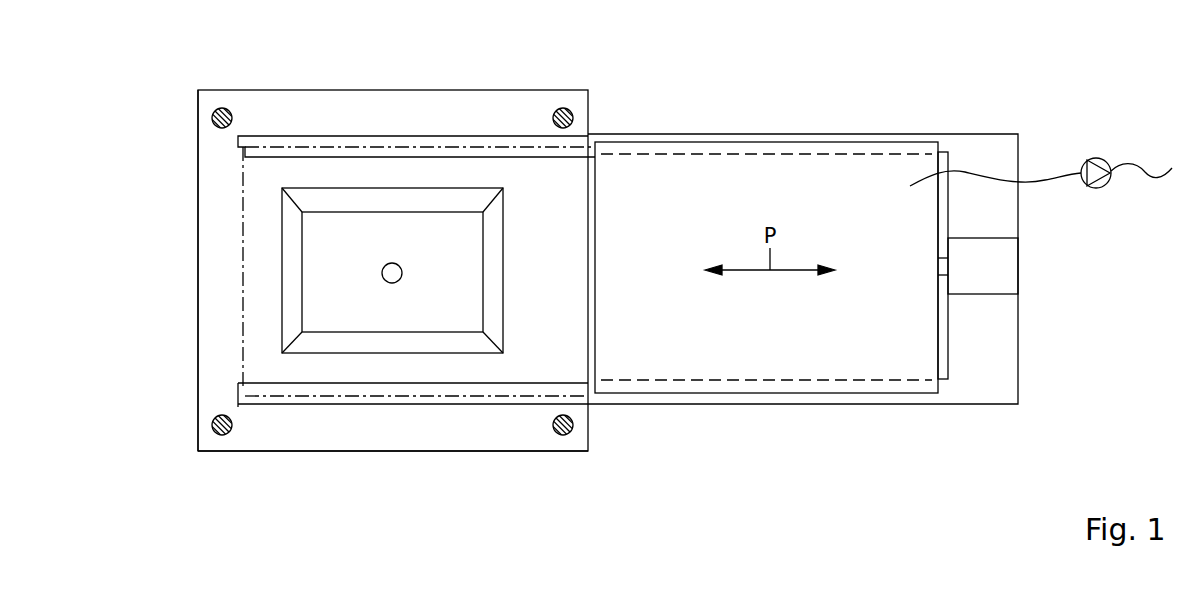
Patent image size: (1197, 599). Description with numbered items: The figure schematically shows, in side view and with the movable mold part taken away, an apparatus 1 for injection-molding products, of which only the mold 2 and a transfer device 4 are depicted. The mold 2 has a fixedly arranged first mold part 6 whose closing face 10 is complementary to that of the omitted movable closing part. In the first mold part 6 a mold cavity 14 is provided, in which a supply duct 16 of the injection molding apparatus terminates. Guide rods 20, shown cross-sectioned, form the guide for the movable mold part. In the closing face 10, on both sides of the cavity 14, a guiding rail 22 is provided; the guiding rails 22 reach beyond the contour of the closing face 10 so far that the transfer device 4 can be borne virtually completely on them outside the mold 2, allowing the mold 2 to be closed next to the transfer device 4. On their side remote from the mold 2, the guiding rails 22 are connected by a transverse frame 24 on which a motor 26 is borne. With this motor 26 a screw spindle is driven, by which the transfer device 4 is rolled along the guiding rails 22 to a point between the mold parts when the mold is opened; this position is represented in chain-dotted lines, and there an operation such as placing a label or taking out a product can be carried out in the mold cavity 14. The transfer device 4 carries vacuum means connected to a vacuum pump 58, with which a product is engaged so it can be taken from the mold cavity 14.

The apparatus 1 is at (818, 60).
The mold 2 is at (463, 107).
The transfer device 4 is at (808, 340).
The first mold part 6 is at (198, 274).
The first closing face 10 is at (273, 427).
The mold cavity 14 is at (457, 287).
The supply duct 16 is at (392, 263).
The guide rods 20 is at (222, 108).
The guiding rails 22 is at (324, 136).
The transverse frame 24 is at (1085, 342).
The motor 26 is at (1004, 276).
The vacuum pump 58 is at (1104, 158).